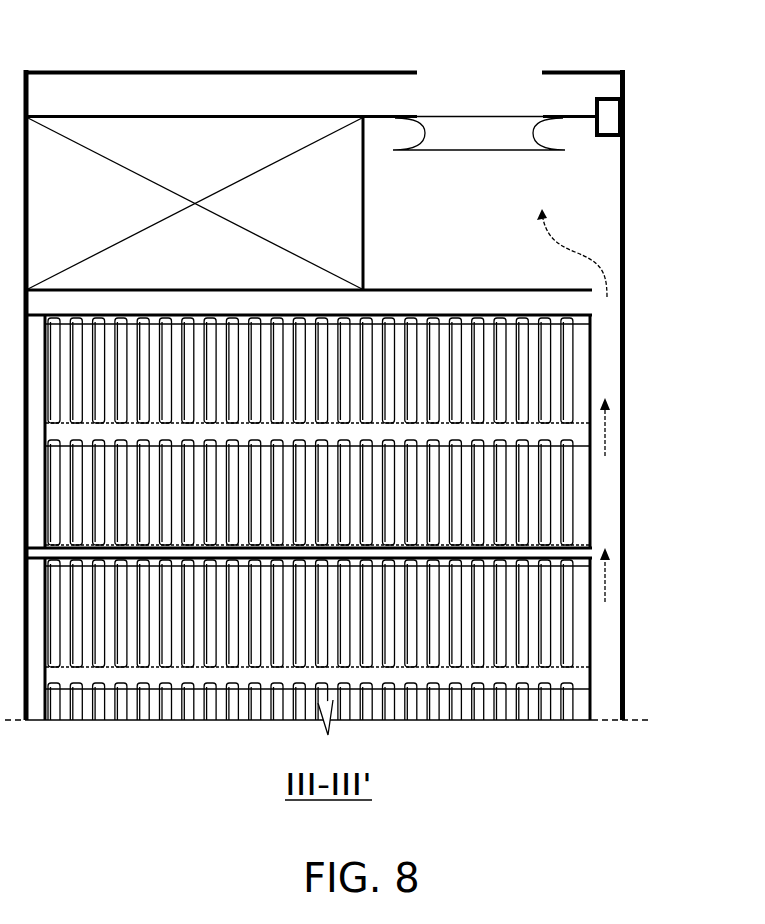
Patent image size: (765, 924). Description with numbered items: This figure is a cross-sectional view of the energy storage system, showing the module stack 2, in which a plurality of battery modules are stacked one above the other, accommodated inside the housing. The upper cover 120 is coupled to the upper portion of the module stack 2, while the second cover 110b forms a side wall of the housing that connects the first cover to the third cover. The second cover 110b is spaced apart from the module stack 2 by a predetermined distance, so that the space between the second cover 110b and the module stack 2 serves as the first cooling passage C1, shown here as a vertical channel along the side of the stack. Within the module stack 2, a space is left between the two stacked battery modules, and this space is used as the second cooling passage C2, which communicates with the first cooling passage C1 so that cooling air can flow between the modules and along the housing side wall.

The upper cover 120 is at (588, 70).
The second cover 110b is at (626, 220).
The first cooling passage C1 is at (608, 478).
The second cooling passage C2 is at (537, 553).
The module stack 2 is at (596, 672).